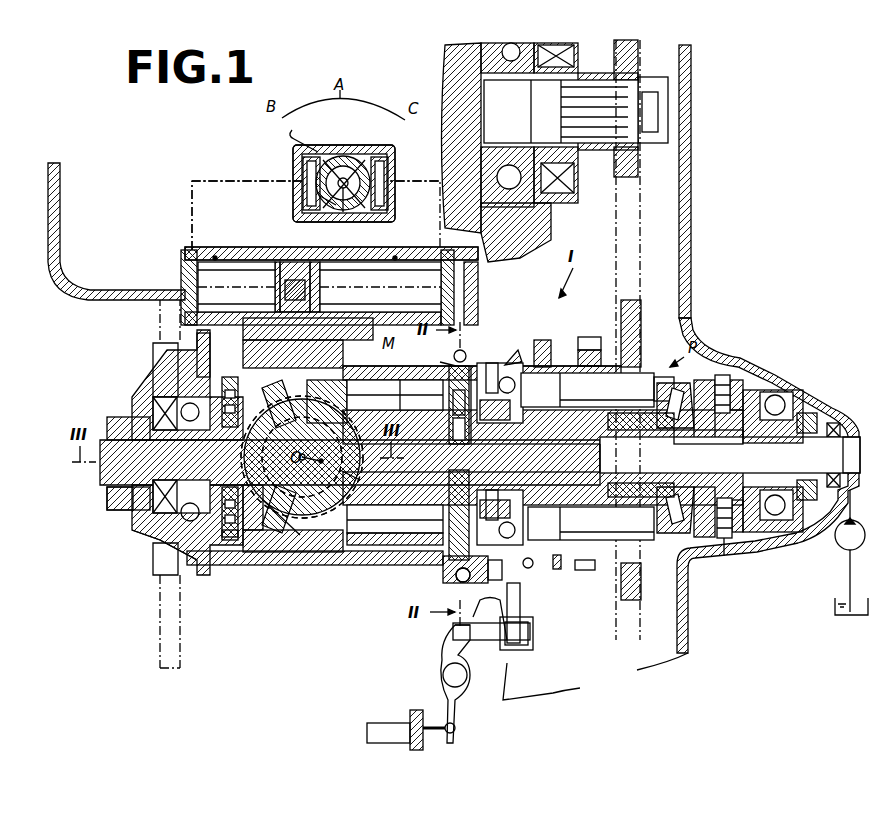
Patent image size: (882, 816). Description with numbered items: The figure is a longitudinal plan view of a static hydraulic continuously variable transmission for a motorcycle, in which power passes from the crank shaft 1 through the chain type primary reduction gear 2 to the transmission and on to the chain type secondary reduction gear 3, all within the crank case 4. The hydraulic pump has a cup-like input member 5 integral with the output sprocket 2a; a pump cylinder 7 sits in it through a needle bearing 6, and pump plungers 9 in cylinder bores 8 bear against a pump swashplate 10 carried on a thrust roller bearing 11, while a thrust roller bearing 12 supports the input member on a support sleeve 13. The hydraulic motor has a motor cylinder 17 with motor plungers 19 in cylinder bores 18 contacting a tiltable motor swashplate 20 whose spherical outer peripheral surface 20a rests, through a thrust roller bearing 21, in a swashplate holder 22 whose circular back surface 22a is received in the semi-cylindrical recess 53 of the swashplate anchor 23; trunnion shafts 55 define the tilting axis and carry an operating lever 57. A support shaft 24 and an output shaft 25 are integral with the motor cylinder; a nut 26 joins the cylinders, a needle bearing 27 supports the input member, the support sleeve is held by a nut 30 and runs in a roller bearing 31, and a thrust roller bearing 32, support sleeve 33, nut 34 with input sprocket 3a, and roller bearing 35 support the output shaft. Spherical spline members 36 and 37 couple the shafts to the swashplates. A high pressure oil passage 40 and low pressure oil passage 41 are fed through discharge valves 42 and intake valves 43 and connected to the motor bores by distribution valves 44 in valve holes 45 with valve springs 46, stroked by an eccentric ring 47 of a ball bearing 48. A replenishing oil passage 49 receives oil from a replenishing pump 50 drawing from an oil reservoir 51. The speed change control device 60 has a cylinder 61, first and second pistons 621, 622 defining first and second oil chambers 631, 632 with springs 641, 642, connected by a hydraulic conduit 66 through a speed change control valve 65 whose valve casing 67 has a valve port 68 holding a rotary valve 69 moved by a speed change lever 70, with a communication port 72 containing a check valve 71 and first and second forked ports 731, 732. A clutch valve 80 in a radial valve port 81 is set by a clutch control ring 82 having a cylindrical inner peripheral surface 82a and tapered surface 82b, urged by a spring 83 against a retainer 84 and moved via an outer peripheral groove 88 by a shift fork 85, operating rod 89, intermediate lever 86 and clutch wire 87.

The crank shaft 1 is at (548, 116).
The chain type primary reduction gear 2 is at (640, 196).
The output sprocket 2a is at (641, 322).
The chain type secondary reduction gear 3 is at (158, 640).
The input sprocket 3a is at (168, 540).
The crank case 4 is at (690, 282).
The input member 5 is at (666, 384).
The needle bearing 6 is at (592, 356).
The pump cylinder 7 is at (533, 364).
The cylinder bores 8 is at (587, 456).
The pump plungers 9 is at (600, 399).
The pump swashplate 10 is at (656, 394).
The thrust roller bearing 11 is at (684, 533).
The thrust roller bearing 12 is at (724, 540).
The support sleeve 13 is at (763, 492).
The motor cylinder 17 is at (364, 366).
The cylinder bores 18 is at (399, 384).
The motor plungers 19 is at (366, 401).
The motor swashplate 20 is at (346, 538).
The outer peripheral surface 20a is at (314, 380).
The thrust roller bearing 21 is at (304, 532).
The swashplate holder 22 is at (280, 527).
The back surface 22a is at (240, 398).
The swashplate anchor 23 is at (253, 540).
The support shaft 24 is at (705, 436).
The output shaft 25 is at (108, 470).
The nut 26 is at (600, 432).
The needle bearing 27 is at (723, 498).
The nut 30 is at (806, 413).
The roller bearing 31 is at (776, 395).
The thrust roller bearing 32 is at (230, 540).
The support sleeve 33 is at (191, 503).
The nut 34 is at (124, 503).
The roller bearing 35 is at (190, 422).
The spherical spline member 36 is at (620, 432).
The spherical spline member 37 is at (327, 401).
The high pressure oil passage 40 is at (492, 423).
The low pressure oil passage 41 is at (501, 376).
The discharge valves 42 is at (511, 422).
The intake valves 43 is at (511, 362).
The distribution valves 44 is at (447, 392).
The valve holes 45 is at (452, 410).
The valve springs 46 is at (453, 437).
The eccentric ring 47 is at (440, 362).
The ball bearing 48 is at (454, 354).
The replenishing oil passage 49 is at (860, 452).
The replenishing pump 50 is at (856, 531).
The oil reservoir 51 is at (856, 600).
The semi-cylindrical recess 53 is at (292, 535).
The trunnion shaft 55 is at (356, 472).
The operating lever 57 is at (295, 287).
The speed change control device 60 is at (234, 173).
The cylinder 61 is at (378, 252).
The first piston 621 is at (214, 257).
The second piston 622 is at (396, 257).
The first oil chamber 631 is at (236, 287).
The second oil chamber 632 is at (380, 287).
The spring 641 is at (183, 270).
The spring 642 is at (460, 287).
The speed change control valve 65 is at (292, 160).
The hydraulic conduit 66 is at (212, 183).
The valve casing 67 is at (398, 156).
The valve port 68 is at (350, 196).
The rotary valve 69 is at (343, 165).
The speed change lever 70 is at (292, 133).
The check valve 71 is at (343, 200).
The communication port 72 is at (304, 194).
The first forked port 731 is at (304, 170).
The second forked port 732 is at (388, 189).
The clutch valve 80 is at (490, 362).
The radial valve port 81 is at (476, 423).
The clutch control ring 82 is at (529, 567).
The cylindrical inner peripheral surface 82a is at (496, 572).
The tapered surface 82b is at (452, 566).
The spring 83 is at (558, 569).
The retainer 84 is at (580, 571).
The shift fork 85 is at (518, 607).
The intermediate lever 86 is at (443, 657).
The clutch wire 87 is at (440, 718).
The outer peripheral groove 88 is at (520, 600).
The operating rod 89 is at (450, 630).